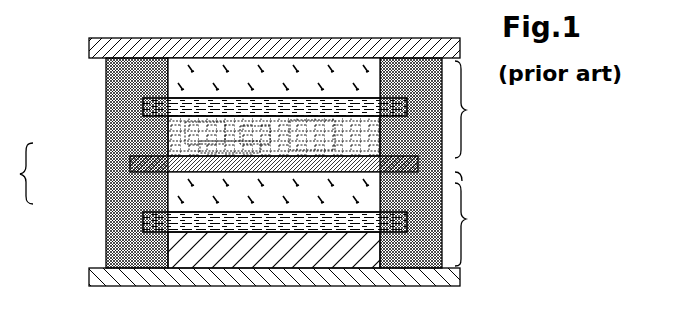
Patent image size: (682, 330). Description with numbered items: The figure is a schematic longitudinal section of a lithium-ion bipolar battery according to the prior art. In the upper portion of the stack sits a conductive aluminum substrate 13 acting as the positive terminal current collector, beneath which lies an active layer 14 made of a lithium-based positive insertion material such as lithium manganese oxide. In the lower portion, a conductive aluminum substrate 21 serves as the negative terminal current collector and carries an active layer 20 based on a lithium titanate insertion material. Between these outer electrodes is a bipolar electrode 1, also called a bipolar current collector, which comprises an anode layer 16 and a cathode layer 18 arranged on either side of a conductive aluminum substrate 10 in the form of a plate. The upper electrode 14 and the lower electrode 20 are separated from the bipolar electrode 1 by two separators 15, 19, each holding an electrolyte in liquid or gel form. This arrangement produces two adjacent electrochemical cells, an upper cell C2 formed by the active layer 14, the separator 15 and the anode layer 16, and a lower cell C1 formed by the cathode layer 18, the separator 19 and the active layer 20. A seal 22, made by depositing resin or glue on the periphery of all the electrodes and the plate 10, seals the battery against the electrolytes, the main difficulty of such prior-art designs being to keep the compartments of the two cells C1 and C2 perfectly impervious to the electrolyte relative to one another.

The bipolar electrode 1 is at (20, 173).
The conductive aluminum substrate 10 is at (444, 155).
The conductive aluminum substrate 13 is at (94, 51).
The active layer 14 is at (107, 79).
The separator 15 is at (107, 108).
The anode layer 16 is at (107, 140).
The cathode layer 18 is at (107, 182).
The separator 19 is at (107, 219).
The active layer 20 is at (190, 248).
The conductive aluminum substrate 21 is at (92, 275).
The seal 22 is at (460, 181).
The cell C1 is at (476, 224).
The cell C2 is at (476, 109).